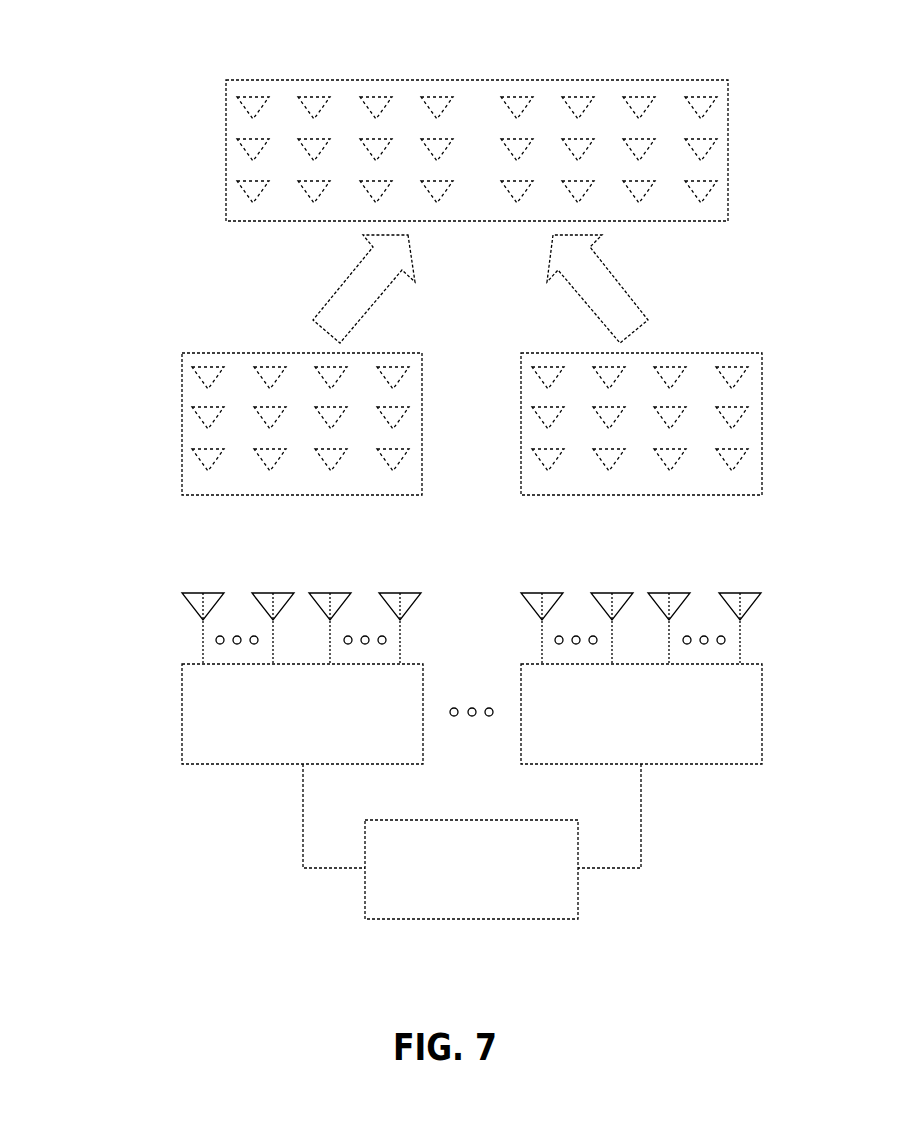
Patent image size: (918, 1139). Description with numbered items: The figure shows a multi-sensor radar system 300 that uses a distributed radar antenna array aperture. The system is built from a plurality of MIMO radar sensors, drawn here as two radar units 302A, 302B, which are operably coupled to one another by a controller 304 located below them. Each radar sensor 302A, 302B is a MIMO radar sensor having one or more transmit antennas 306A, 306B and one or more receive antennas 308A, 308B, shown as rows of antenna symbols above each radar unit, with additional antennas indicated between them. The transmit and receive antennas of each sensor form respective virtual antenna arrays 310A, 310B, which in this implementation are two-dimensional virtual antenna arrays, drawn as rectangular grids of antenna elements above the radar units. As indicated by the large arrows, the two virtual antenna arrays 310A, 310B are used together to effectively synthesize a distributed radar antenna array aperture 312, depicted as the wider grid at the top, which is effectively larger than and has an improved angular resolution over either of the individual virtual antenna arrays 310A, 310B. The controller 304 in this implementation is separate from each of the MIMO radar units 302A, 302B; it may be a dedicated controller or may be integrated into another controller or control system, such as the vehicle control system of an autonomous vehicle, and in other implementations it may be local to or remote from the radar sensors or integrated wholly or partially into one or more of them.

The multi-sensor radar system 300 is at (80, 606).
The radar sensor 302A is at (278, 740).
The radar sensor 302B is at (618, 740).
The controller 304 is at (453, 895).
The transmit antennas 306A is at (198, 593).
The transmit antennas 306B is at (537, 593).
The receive antennas 308A is at (410, 610).
The receive antennas 308B is at (750, 610).
The virtual antenna array 310A is at (212, 353).
The virtual antenna array 310B is at (568, 353).
The distributed radar antenna array aperture 312 is at (395, 80).